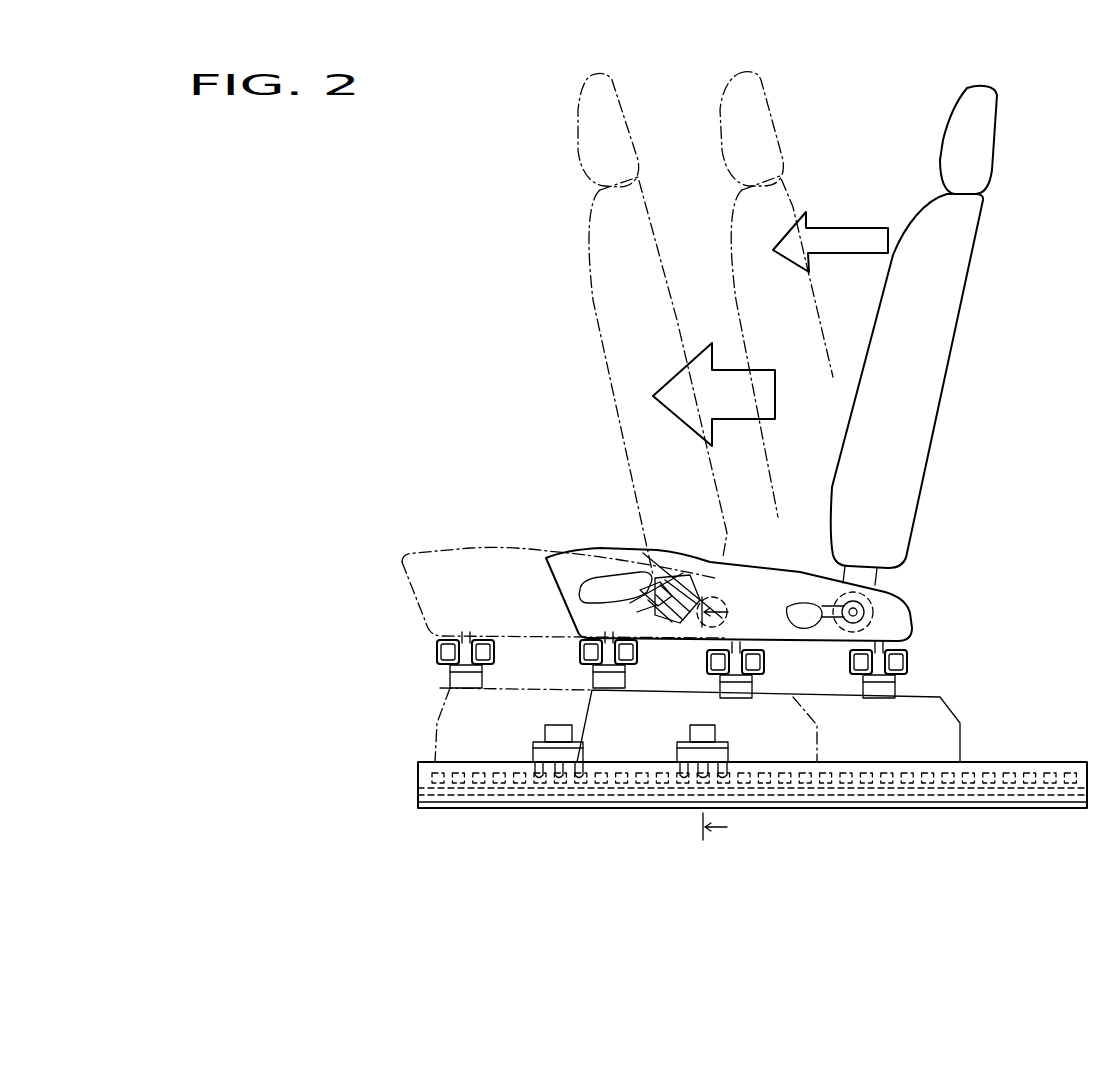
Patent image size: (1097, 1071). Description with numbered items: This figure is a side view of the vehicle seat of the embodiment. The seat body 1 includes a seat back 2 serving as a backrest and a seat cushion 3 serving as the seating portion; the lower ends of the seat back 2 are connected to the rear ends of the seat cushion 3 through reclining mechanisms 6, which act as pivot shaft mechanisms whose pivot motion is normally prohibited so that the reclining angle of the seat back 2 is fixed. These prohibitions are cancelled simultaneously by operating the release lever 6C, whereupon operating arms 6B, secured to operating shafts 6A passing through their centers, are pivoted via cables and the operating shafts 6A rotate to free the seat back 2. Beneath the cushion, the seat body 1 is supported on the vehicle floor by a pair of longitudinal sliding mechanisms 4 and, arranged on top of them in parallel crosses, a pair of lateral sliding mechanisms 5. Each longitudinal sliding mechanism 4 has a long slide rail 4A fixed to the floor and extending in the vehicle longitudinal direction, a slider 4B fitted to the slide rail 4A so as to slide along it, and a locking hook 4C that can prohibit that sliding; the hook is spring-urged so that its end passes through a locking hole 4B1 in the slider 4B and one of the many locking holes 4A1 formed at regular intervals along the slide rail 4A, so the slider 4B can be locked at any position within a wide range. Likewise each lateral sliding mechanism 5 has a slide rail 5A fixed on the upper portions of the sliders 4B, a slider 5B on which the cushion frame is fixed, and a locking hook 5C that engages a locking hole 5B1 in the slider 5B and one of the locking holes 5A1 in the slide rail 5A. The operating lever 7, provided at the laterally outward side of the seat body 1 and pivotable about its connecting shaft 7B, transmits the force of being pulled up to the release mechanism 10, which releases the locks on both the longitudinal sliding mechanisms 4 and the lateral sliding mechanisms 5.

The seat body 1 is at (1028, 160).
The seat back 2 is at (653, 260).
The seat cushion 3 is at (468, 553).
The longitudinal sliding mechanism 4 is at (1072, 760).
The slide rail 4A is at (984, 762).
The locking hole 4A1 is at (955, 722).
The slider 4B is at (955, 722).
The locking hole 4B1 is at (693, 778).
The locking hook 4C is at (677, 752).
The lateral sliding mechanism 5 is at (569, 664).
The slide rail 5A is at (627, 665).
The locking hole 5A1 is at (672, 681).
The slider 5B is at (580, 647).
The locking hole 5B1 is at (672, 653).
The locking hook 5C is at (672, 653).
The reclining mechanism 6 is at (890, 592).
The operating shaft 6A is at (876, 606).
The operating arm 6B is at (853, 612).
The release lever 6C is at (803, 598).
The operating lever 7 is at (568, 549).
The connecting shaft 7B is at (646, 575).
The release mechanism 10 is at (705, 587).